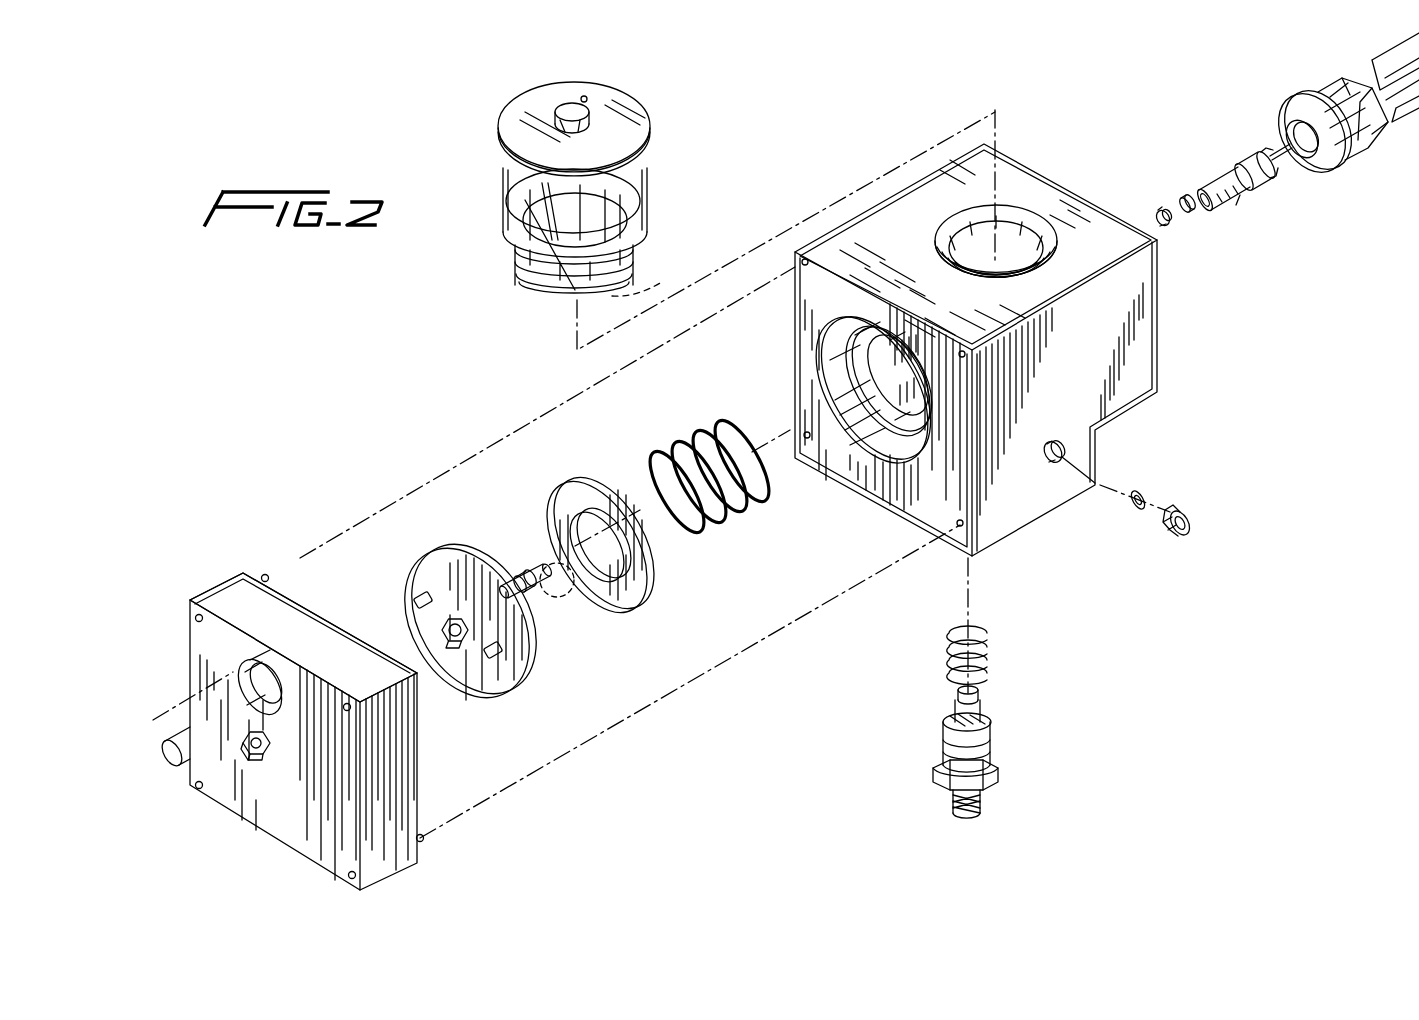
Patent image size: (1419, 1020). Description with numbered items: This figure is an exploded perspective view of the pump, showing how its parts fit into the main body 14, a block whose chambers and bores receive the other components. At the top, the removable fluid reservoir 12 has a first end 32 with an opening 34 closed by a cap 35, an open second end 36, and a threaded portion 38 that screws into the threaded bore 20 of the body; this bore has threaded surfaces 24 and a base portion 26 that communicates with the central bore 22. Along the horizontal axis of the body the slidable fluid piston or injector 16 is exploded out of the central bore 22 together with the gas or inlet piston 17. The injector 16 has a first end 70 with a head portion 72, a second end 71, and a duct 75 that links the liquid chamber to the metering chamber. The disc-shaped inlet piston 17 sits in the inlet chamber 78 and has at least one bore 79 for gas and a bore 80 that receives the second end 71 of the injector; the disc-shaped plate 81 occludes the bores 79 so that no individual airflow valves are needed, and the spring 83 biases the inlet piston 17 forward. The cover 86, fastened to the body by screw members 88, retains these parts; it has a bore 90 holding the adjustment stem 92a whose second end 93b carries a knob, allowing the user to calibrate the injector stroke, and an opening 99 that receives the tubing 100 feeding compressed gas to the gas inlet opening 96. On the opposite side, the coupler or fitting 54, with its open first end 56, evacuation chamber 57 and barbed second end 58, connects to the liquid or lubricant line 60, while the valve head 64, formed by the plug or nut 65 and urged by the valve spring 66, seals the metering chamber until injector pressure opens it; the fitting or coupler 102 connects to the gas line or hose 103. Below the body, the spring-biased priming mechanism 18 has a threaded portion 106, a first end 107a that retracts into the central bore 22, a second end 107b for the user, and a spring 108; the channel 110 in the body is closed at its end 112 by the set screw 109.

The fluid reservoir 12 is at (590, 179).
The main body 14 is at (1049, 383).
The fluid piston or injector 16 is at (552, 645).
The inlet piston 17 is at (480, 682).
The priming mechanism 18 is at (917, 760).
The threaded bore 20 is at (1005, 267).
The central bore 22 is at (870, 380).
The threaded surfaces 24 is at (1042, 238).
The base portion 26 is at (1000, 267).
The first end 32 is at (640, 118).
The opening 34 is at (590, 118).
The cap 35 is at (562, 108).
The open second end 36 is at (642, 274).
The threaded portion 38 is at (630, 250).
The coupler or fitting 54 is at (1240, 160).
The open first end 56 is at (1210, 192).
The evacuation chamber 57 is at (1236, 210).
The second end 58 is at (1276, 152).
The liquid or lubricant line 60 is at (1388, 76).
The valve head 64 is at (1163, 209).
The plug or nut 65 is at (1158, 214).
The valve spring 66 is at (1190, 213).
The first end 70 is at (545, 562).
The second end 71 is at (448, 630).
The head portion 72 is at (548, 598).
The duct 75 is at (524, 572).
The inlet chamber 78 is at (837, 388).
The bore 79 is at (418, 595).
The bore 80 is at (473, 687).
The disc-shaped plate 81 is at (560, 492).
The spring 83 is at (708, 440).
The cover 86 is at (243, 583).
The screw members 88 is at (199, 614).
The bore 90 is at (270, 747).
The adjustment stem 92a is at (257, 752).
The second end 93b is at (263, 755).
The gas inlet opening 96 is at (883, 352).
The opening 99 is at (260, 670).
The tubing 100 is at (217, 740).
The fitting or coupler 102 is at (1320, 88).
The gas line or hose 103 is at (1406, 112).
The threaded portion 106 is at (990, 750).
The first end 107a is at (980, 693).
The second end 107b is at (996, 781).
The spring 108 is at (990, 645).
The set screw 109 is at (1182, 507).
The channel 110 is at (1062, 450).
The end 112 is at (1052, 460).